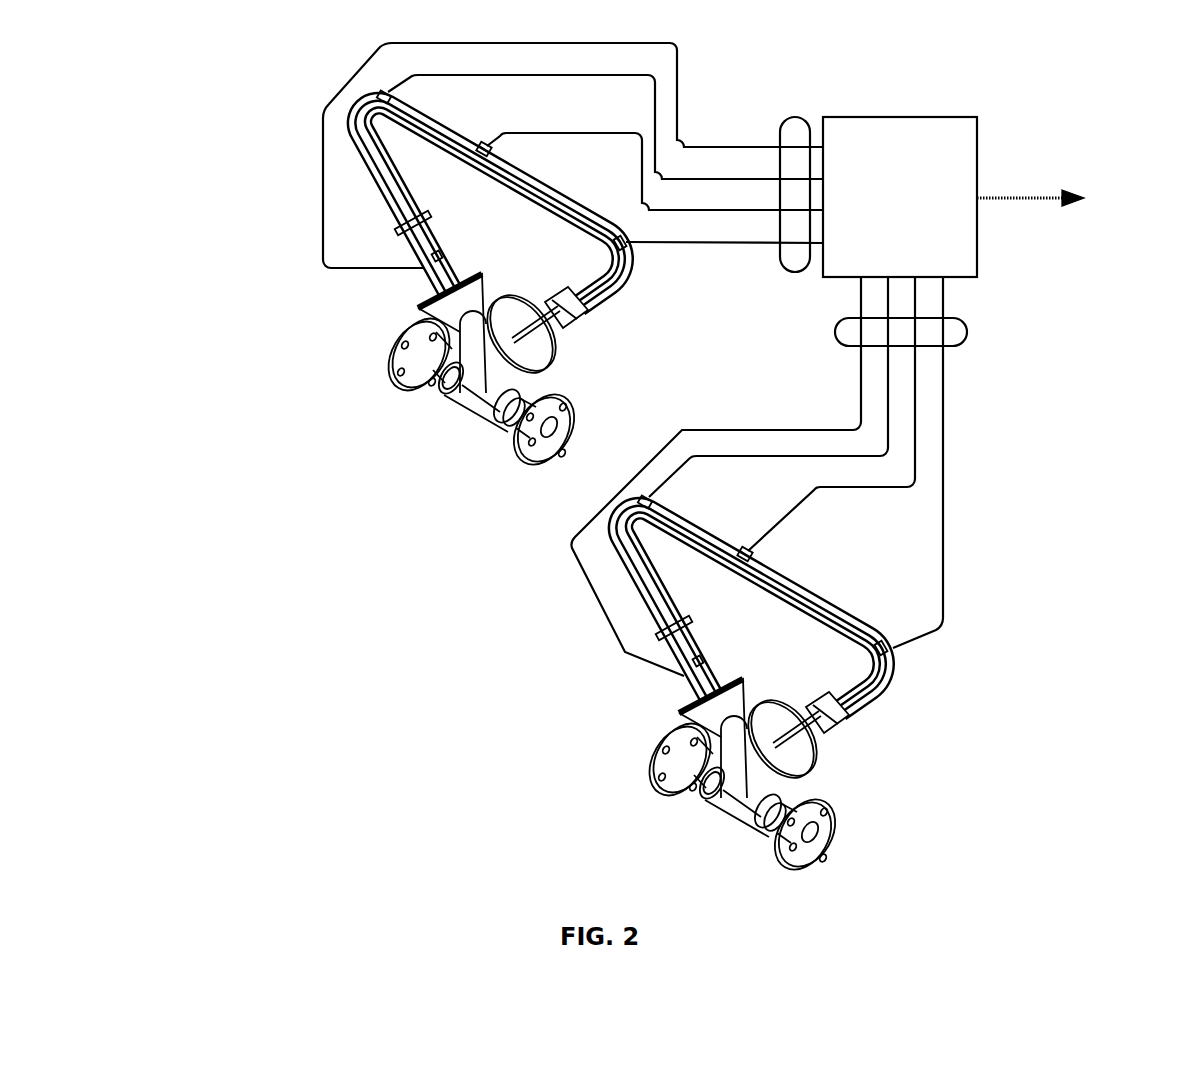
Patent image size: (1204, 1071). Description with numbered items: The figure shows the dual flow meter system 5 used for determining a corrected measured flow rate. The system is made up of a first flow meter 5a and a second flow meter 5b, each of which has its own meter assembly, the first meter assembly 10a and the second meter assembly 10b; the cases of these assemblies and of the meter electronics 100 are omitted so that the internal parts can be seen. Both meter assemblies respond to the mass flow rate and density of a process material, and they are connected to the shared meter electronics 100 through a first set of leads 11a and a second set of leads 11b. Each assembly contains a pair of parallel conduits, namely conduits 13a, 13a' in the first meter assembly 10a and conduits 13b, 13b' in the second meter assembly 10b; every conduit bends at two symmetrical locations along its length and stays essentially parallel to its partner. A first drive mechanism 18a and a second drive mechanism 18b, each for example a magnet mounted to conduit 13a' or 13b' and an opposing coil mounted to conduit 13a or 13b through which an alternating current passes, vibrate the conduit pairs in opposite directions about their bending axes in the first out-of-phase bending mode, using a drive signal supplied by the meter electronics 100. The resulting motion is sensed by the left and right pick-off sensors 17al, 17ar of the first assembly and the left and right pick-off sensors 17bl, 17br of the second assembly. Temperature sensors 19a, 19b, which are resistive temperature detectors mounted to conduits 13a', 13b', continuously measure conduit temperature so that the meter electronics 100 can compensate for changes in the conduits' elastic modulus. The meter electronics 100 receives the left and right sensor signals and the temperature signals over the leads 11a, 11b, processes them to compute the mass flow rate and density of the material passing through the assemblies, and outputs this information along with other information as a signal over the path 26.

The dual flow meter system 5 is at (1114, 86).
The first flow meter 5a is at (1010, 751).
The second flow meter 5b is at (244, 62).
The first meter assembly 10a is at (893, 840).
The second meter assembly 10b is at (343, 336).
The first set of leads 11a is at (968, 331).
The second set of leads 11b is at (795, 114).
The conduit 13a is at (707, 608).
The conduit 13a' is at (832, 641).
The conduit 13b is at (445, 203).
The conduit 13b' is at (577, 317).
The left pick-off sensor 17al is at (642, 500).
The right pick-off sensor 17ar is at (891, 655).
The left pick-off sensor 17bl is at (381, 95).
The right pick-off sensor 17br is at (630, 250).
The first drive mechanism 18a is at (744, 550).
The second drive mechanism 18b is at (483, 145).
The temperature sensor 19a is at (700, 658).
The temperature sensor 19b is at (438, 252).
The path 26 is at (1033, 195).
The meter electronics 100 is at (878, 245).